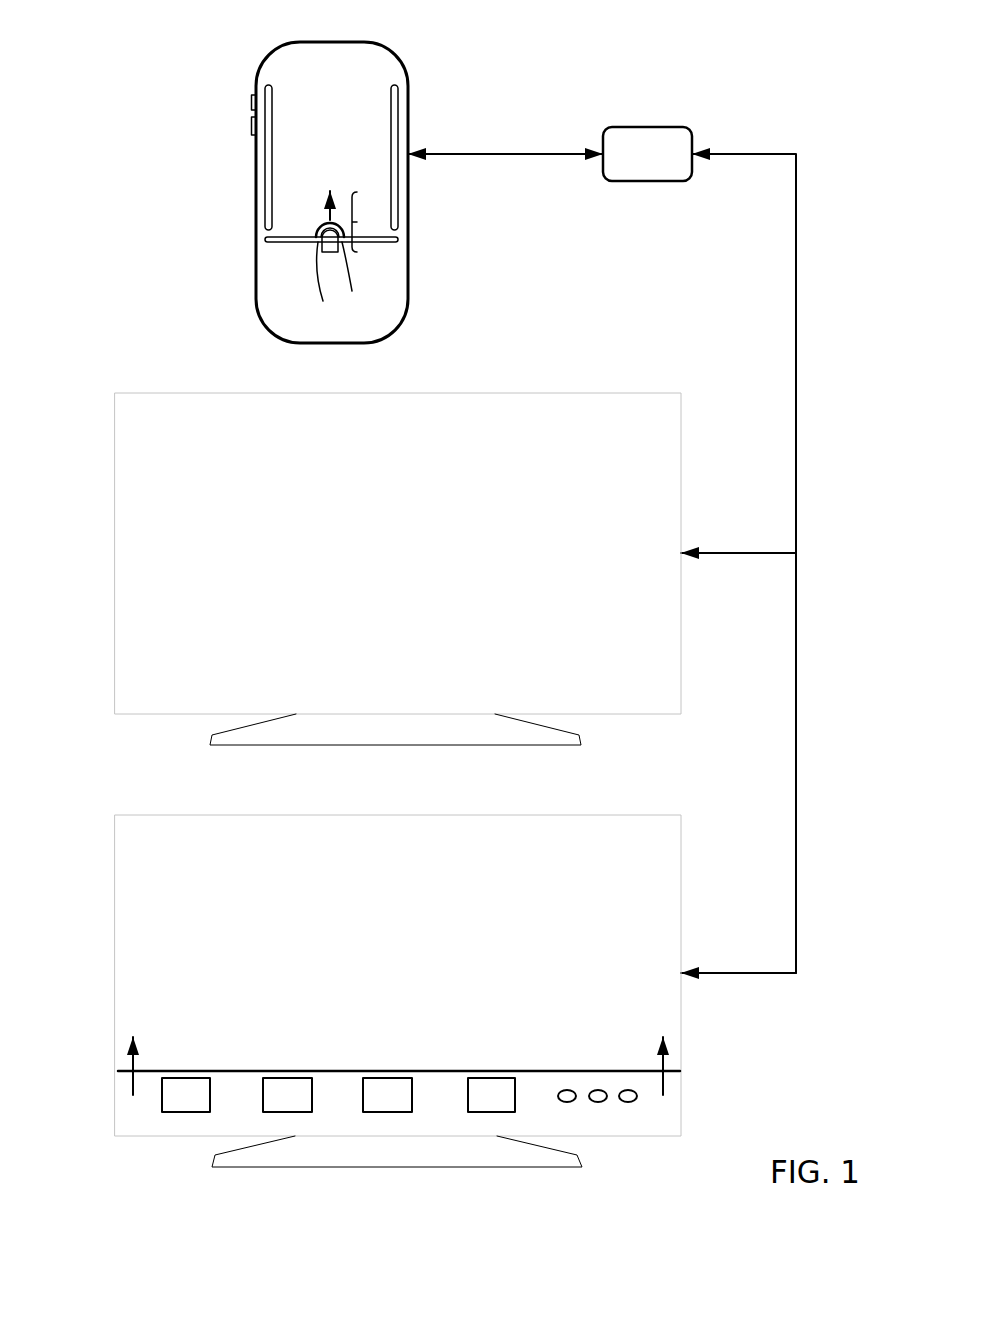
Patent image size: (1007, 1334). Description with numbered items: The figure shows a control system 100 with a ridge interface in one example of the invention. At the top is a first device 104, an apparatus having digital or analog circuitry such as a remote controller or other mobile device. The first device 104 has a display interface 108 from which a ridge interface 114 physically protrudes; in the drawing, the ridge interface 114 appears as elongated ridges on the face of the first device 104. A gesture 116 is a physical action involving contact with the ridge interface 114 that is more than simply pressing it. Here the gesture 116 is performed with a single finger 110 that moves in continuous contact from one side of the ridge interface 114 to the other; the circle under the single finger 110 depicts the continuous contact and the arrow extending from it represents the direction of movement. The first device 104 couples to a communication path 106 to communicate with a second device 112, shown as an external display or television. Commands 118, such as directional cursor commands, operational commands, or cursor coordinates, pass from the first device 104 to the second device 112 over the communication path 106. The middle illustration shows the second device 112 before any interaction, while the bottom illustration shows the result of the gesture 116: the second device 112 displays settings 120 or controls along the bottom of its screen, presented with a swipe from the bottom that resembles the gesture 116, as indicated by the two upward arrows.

The control system 100 is at (148, 53).
The first device 104 is at (252, 77).
The communication path 106 is at (796, 658).
The display interface 108 is at (383, 77).
The single finger 110 is at (337, 267).
The second device 112 is at (653, 432).
The ridge interface 114 is at (283, 250).
The gesture 116 is at (357, 222).
The commands 118 is at (648, 127).
The settings 120 is at (285, 1088).